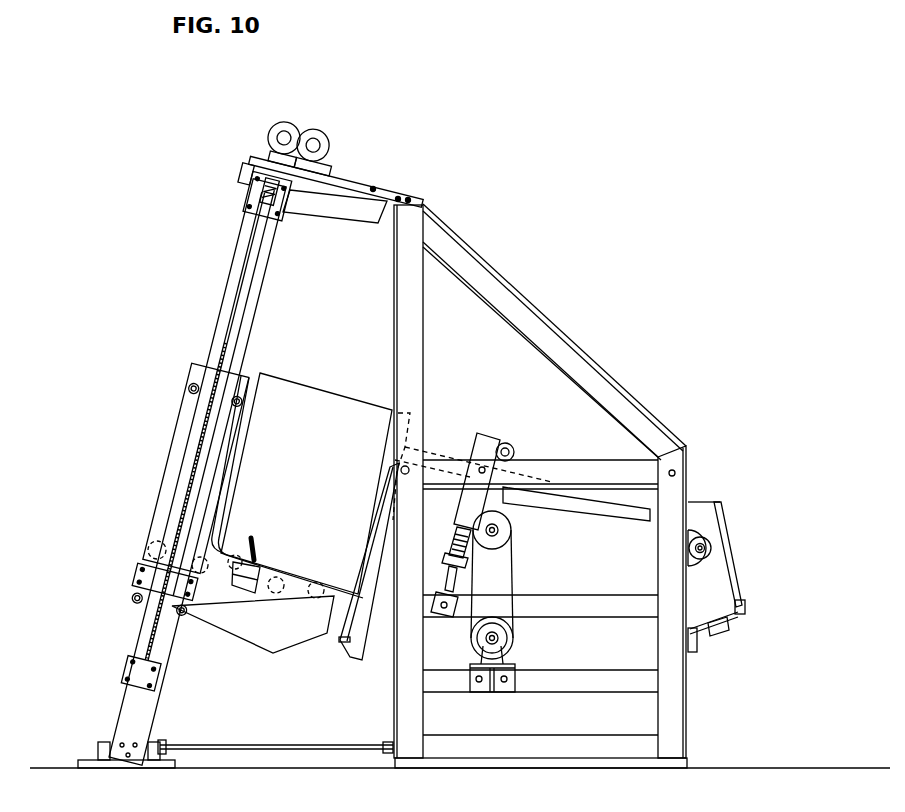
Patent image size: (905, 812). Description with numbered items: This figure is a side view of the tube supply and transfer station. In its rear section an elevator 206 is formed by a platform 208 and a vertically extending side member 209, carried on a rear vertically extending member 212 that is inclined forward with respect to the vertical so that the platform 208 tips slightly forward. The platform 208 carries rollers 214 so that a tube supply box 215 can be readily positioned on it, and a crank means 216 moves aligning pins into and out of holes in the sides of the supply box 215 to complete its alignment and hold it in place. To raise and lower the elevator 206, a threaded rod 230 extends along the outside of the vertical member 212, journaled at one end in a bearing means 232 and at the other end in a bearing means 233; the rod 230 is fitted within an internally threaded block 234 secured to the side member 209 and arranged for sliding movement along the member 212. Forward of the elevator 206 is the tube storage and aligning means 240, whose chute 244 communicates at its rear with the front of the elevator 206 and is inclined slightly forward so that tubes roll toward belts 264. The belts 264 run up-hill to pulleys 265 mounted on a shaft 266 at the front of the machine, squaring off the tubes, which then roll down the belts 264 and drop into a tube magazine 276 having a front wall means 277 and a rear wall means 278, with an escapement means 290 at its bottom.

The elevator 206 is at (460, 628).
The platform 208 is at (215, 628).
The side member 209 is at (183, 418).
The rear vertically extending member 212 is at (274, 243).
The rollers 214 is at (312, 596).
The tube supply box 215 is at (287, 397).
The crank means 216 is at (256, 552).
The threaded rod 230 is at (251, 257).
The bearing means 232 is at (252, 210).
The bearing means 233 is at (128, 668).
The internally threaded block 234 is at (150, 573).
The tube storage and aligning means 240 is at (540, 483).
The chute 244 is at (439, 467).
The belts 264 is at (569, 521).
The pulleys 265 is at (716, 548).
The shaft 266 is at (700, 546).
The tube magazine 276 is at (742, 503).
The front wall means 277 is at (732, 565).
The rear wall means 278 is at (741, 601).
The escapement means 290 is at (728, 630).